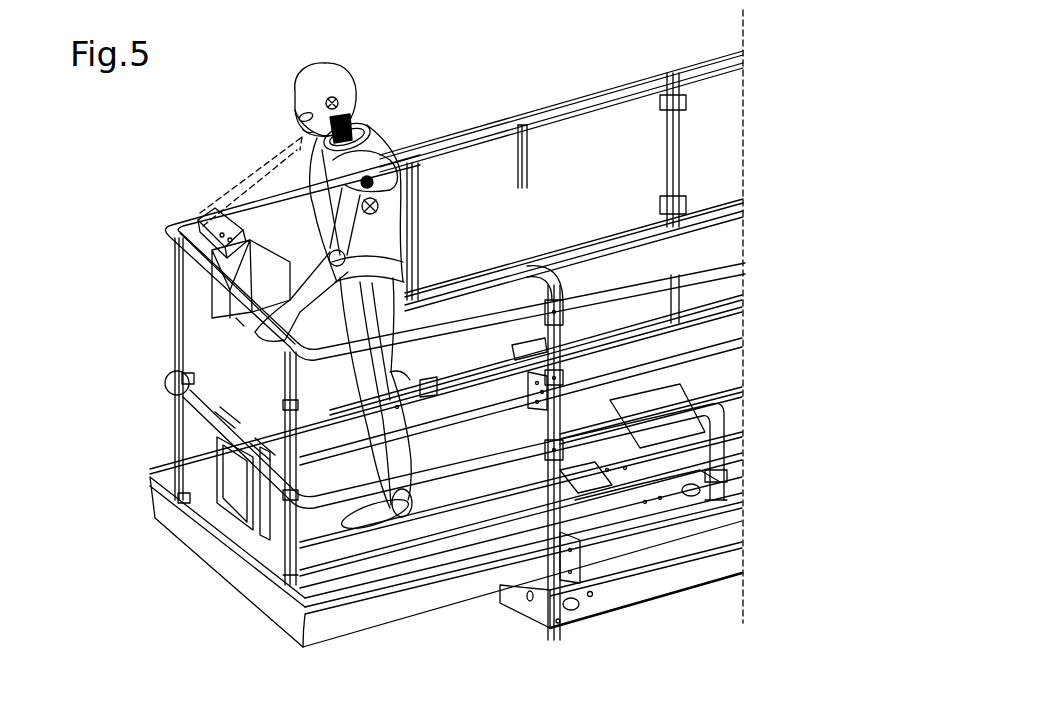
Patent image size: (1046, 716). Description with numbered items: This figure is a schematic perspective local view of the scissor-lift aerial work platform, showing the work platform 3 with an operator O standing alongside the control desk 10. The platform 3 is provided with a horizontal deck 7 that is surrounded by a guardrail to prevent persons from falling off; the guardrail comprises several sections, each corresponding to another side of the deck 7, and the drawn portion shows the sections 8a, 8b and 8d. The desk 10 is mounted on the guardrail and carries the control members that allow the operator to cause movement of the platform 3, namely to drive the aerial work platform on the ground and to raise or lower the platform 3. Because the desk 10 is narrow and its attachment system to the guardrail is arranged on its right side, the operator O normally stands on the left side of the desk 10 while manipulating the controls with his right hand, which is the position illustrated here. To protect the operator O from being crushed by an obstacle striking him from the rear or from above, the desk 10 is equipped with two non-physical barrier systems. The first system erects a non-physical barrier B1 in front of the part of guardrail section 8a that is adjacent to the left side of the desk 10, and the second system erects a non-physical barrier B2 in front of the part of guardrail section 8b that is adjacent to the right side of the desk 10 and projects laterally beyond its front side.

The work platform 3 is at (804, 124).
The deck 7 is at (583, 503).
The guardrail section 8a is at (248, 325).
The guardrail section 8b is at (588, 92).
The guardrail section 8d is at (474, 345).
The control desk 10 is at (194, 204).
The operator O is at (333, 77).
The non-physical barrier B1 is at (233, 319).
The non-physical barrier B2 is at (278, 155).